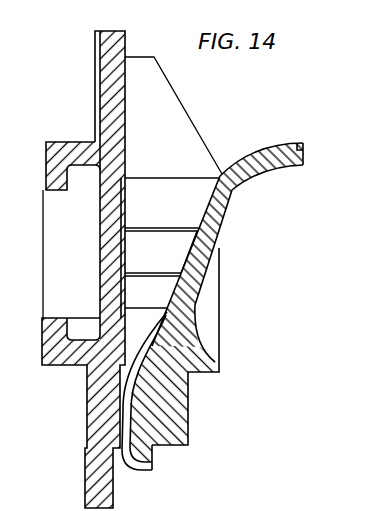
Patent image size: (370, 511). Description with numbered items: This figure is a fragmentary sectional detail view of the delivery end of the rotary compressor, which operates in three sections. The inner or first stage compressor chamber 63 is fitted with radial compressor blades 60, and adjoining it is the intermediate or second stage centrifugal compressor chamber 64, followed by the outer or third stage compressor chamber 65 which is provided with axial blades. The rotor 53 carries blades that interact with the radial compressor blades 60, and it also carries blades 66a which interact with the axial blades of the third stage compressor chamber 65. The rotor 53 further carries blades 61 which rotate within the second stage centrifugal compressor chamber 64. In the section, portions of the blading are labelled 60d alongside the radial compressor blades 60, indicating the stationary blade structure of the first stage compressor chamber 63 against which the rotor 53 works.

The rotor 53 is at (303, 152).
The radial compressor blades 60 is at (185, 117).
The shell segment 60d is at (193, 198).
The blades 61 is at (133, 380).
The first stage compressor chamber 63 is at (100, 182).
The second stage centrifugal compressor chamber 64 is at (115, 407).
The third stage compressor chamber 65 is at (160, 458).
The blades 66a is at (150, 468).